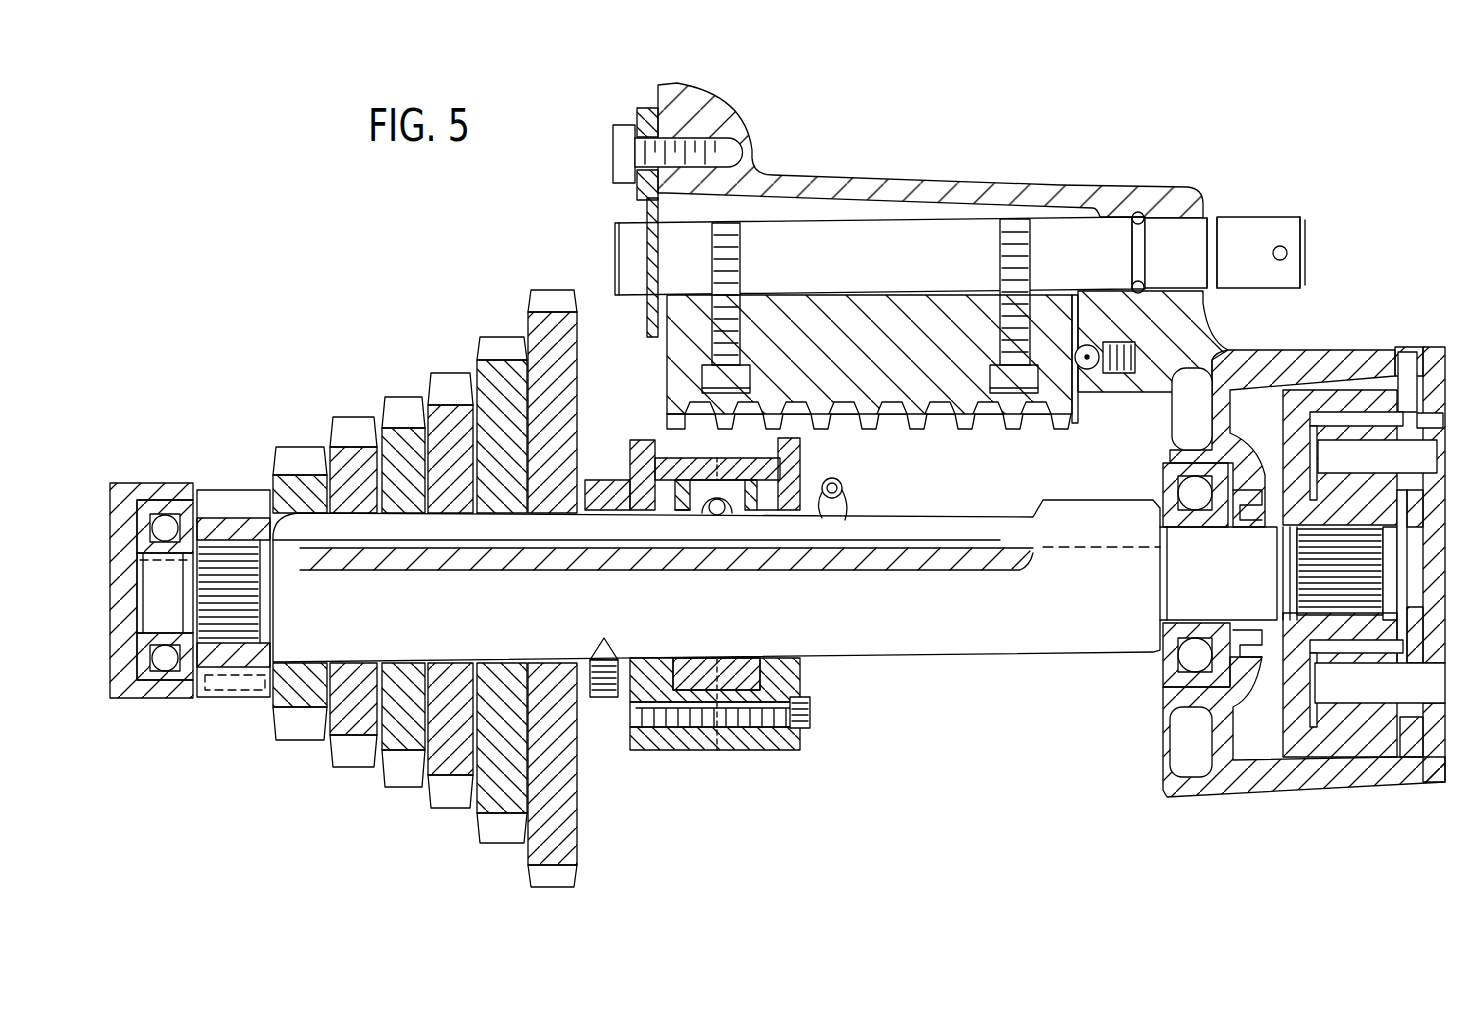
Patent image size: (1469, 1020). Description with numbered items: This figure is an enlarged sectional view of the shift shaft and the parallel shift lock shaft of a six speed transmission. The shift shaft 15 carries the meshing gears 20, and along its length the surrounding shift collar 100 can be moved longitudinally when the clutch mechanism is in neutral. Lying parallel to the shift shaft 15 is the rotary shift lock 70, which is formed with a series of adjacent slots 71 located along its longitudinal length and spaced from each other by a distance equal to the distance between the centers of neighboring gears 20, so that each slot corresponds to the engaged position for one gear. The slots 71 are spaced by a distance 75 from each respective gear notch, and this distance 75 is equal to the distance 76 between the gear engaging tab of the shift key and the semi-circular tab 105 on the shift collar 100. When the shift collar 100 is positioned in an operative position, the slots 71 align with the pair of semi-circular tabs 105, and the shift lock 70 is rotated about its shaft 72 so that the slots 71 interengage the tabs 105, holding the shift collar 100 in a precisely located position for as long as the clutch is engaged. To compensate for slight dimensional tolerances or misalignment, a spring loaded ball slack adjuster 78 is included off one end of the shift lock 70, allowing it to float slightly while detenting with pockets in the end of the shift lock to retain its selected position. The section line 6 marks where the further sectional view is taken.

The section line 6- 6 is at (720, 115).
The shift shaft 15 is at (1080, 487).
The meshing gears 20 is at (316, 426).
The rotary shift lock 70 is at (1290, 208).
The slots 71 is at (1042, 418).
The shaft 72 is at (1286, 276).
The distance 75 is at (990, 440).
The distance 76 is at (792, 660).
The spring loaded ball slack adjuster 78 is at (1087, 344).
The shift collar 100 is at (802, 742).
The semi-circular tabs 105 is at (802, 453).